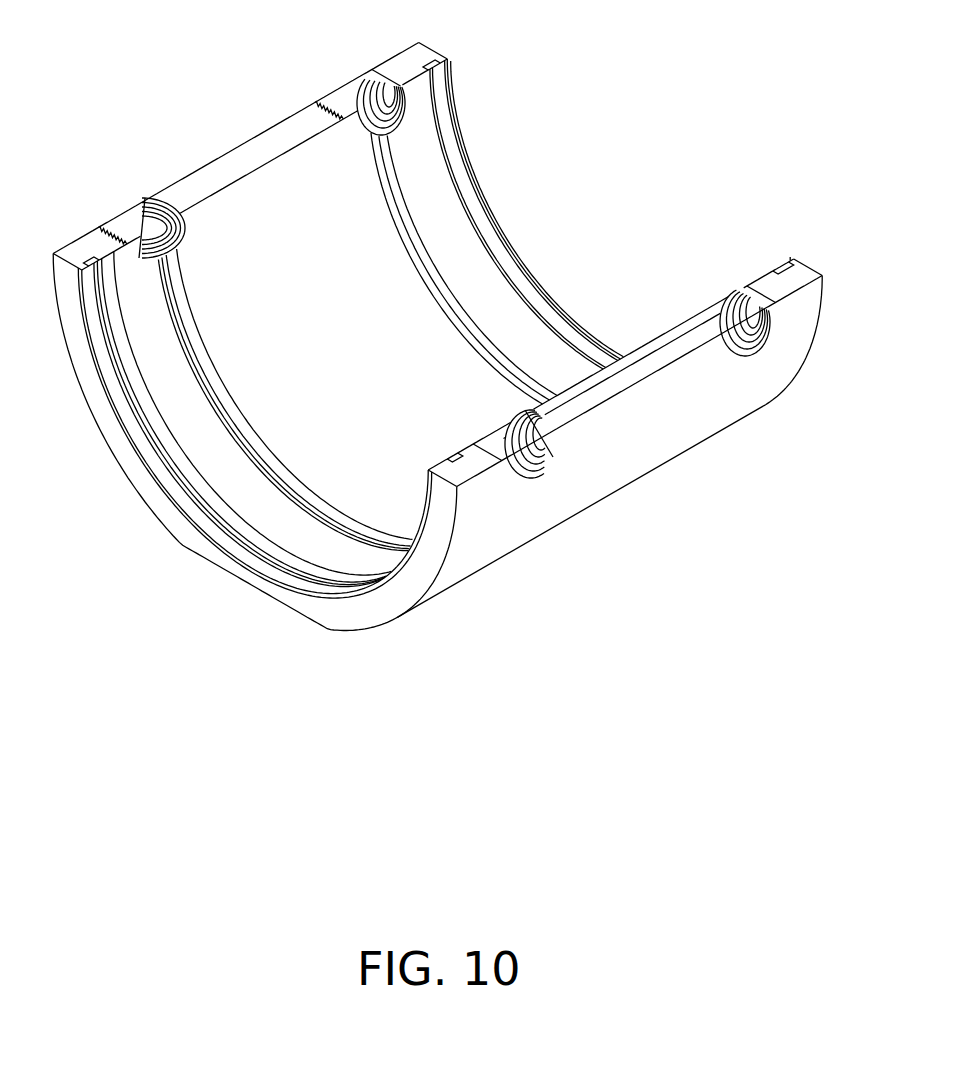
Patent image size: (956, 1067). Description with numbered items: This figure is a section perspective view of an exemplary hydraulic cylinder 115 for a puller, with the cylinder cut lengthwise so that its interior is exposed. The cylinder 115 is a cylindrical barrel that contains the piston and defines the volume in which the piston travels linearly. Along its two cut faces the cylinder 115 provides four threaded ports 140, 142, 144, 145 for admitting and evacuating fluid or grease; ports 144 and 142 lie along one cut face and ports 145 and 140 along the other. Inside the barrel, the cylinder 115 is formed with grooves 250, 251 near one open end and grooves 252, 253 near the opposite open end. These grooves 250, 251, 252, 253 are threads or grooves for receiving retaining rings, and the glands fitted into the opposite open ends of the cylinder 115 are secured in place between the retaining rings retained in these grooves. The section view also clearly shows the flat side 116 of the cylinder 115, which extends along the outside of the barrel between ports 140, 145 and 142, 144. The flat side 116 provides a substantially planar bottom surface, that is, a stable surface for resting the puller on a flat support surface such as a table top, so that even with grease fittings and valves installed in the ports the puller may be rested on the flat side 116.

The hydraulic cylinder 115 is at (247, 165).
The flat side 116 is at (245, 585).
The threaded port 140 is at (755, 357).
The threaded port 142 is at (358, 95).
The threaded port 144 is at (142, 244).
The threaded port 145 is at (547, 473).
The groove 250 is at (117, 368).
The groove 251 is at (240, 425).
The groove 252 is at (477, 210).
The groove 253 is at (473, 343).